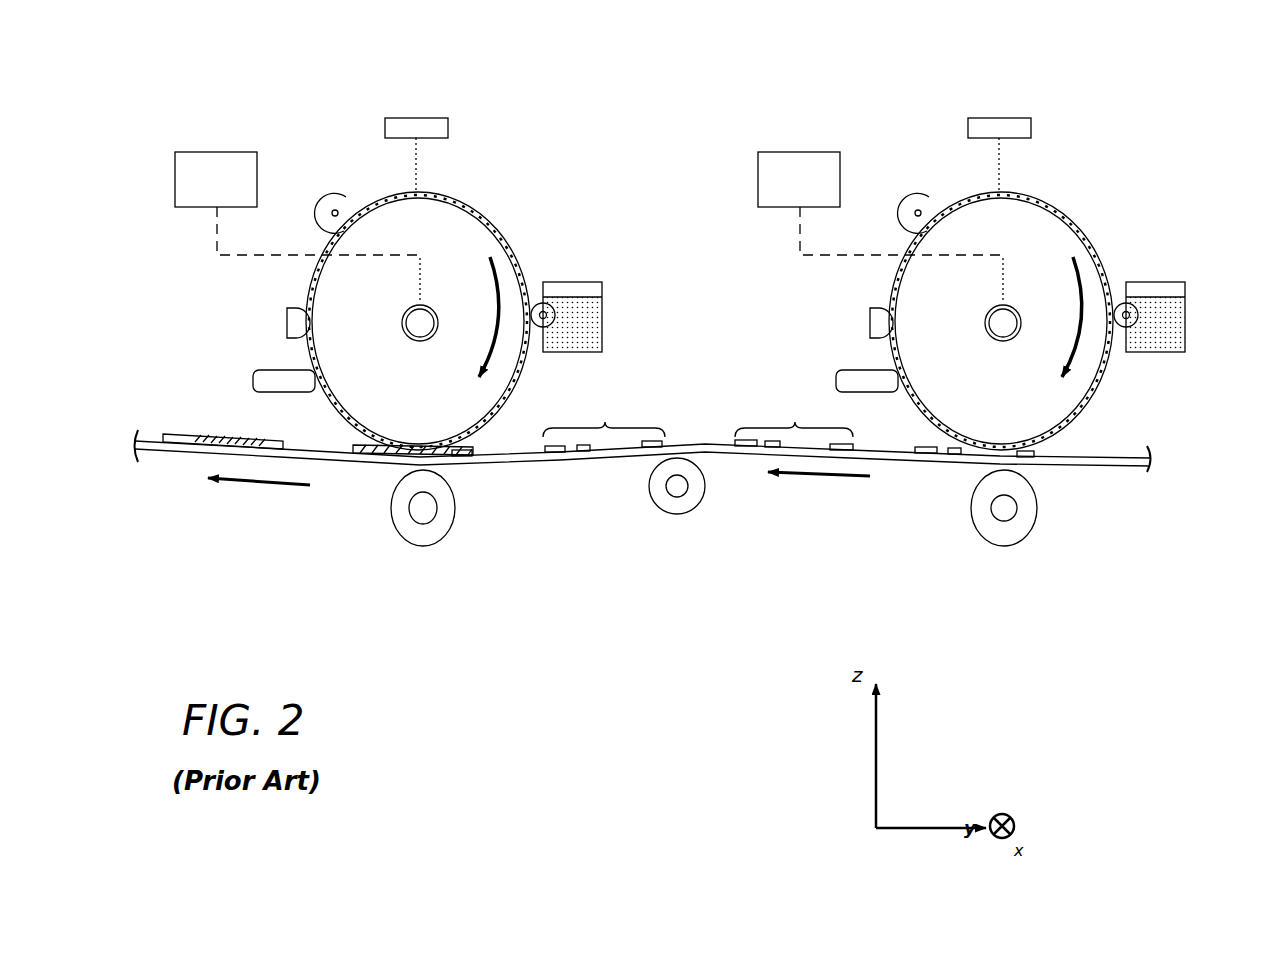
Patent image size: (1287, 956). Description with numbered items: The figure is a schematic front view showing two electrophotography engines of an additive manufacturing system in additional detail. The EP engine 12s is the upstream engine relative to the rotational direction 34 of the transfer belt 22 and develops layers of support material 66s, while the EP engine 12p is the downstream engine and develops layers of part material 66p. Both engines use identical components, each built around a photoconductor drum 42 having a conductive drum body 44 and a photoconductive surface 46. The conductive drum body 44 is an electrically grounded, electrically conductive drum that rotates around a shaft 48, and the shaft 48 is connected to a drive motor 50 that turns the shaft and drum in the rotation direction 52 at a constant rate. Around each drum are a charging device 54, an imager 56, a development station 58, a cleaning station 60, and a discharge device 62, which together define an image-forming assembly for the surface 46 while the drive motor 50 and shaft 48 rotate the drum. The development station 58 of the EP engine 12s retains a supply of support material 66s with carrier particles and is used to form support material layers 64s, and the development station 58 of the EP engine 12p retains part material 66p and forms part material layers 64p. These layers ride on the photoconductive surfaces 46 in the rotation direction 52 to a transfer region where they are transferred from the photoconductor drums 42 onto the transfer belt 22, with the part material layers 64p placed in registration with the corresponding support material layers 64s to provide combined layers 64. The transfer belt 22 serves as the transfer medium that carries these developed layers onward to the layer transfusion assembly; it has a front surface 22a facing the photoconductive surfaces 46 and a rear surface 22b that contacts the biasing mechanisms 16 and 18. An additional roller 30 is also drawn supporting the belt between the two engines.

The EP engine 12p is at (504, 106).
The EP engine 12s is at (1013, 254).
The biasing mechanism 16 is at (1020, 517).
The biasing mechanism 18 is at (437, 517).
The transfer belt 22 is at (648, 467).
The front surface 22a is at (708, 446).
The rear surface 22b is at (712, 455).
The idler roller 30 is at (680, 512).
The rotational direction 34 is at (262, 487).
The photoconductor drum 42 is at (519, 231).
The conductive drum body 44 is at (432, 404).
The photoconductive surface 46 is at (468, 200).
The shaft 48 is at (407, 322).
The drive motor 50 is at (195, 152).
The rotation direction 52 is at (503, 290).
The charging device 54 is at (345, 195).
The imager 56 is at (402, 118).
The development station 58 is at (607, 279).
The cleaning station 60 is at (268, 370).
The discharge device 62 is at (287, 310).
The combined layer 64 is at (210, 429).
The part material layer 64p is at (534, 383).
The support material layer 64s is at (1160, 410).
The part material 66p is at (587, 310).
The support material 66s is at (1208, 347).